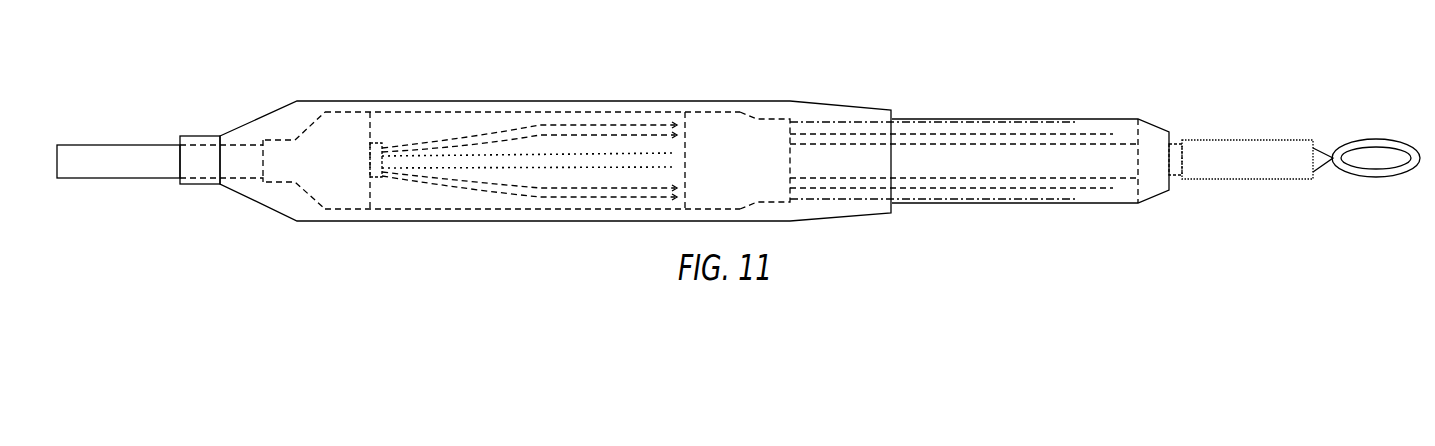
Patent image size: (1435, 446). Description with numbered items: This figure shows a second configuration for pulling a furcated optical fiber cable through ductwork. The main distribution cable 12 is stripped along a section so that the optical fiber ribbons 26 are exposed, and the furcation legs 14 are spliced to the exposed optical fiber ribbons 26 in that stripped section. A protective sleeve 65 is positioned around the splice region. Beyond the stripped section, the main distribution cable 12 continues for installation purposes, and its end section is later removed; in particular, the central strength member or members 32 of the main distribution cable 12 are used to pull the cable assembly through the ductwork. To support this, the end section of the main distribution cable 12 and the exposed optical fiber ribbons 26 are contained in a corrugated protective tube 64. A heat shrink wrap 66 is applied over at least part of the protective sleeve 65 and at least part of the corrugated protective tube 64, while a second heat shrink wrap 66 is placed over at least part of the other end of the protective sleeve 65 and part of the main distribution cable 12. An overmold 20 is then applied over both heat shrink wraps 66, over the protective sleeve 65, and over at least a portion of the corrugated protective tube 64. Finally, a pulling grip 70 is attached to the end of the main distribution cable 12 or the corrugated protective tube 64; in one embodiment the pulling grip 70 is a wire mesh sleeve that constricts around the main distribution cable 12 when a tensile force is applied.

The main distribution cable 12 is at (130, 145).
The furcation legs 14 is at (947, 123).
The overmold 20 is at (557, 100).
The optical fiber ribbons 26 is at (490, 130).
The central strength member 32 is at (578, 158).
The corrugated protective tube 64 is at (1010, 118).
The protective sleeve 65 is at (407, 102).
The heat shrink wrap 66 is at (323, 112).
The pulling grip 70 is at (1272, 138).